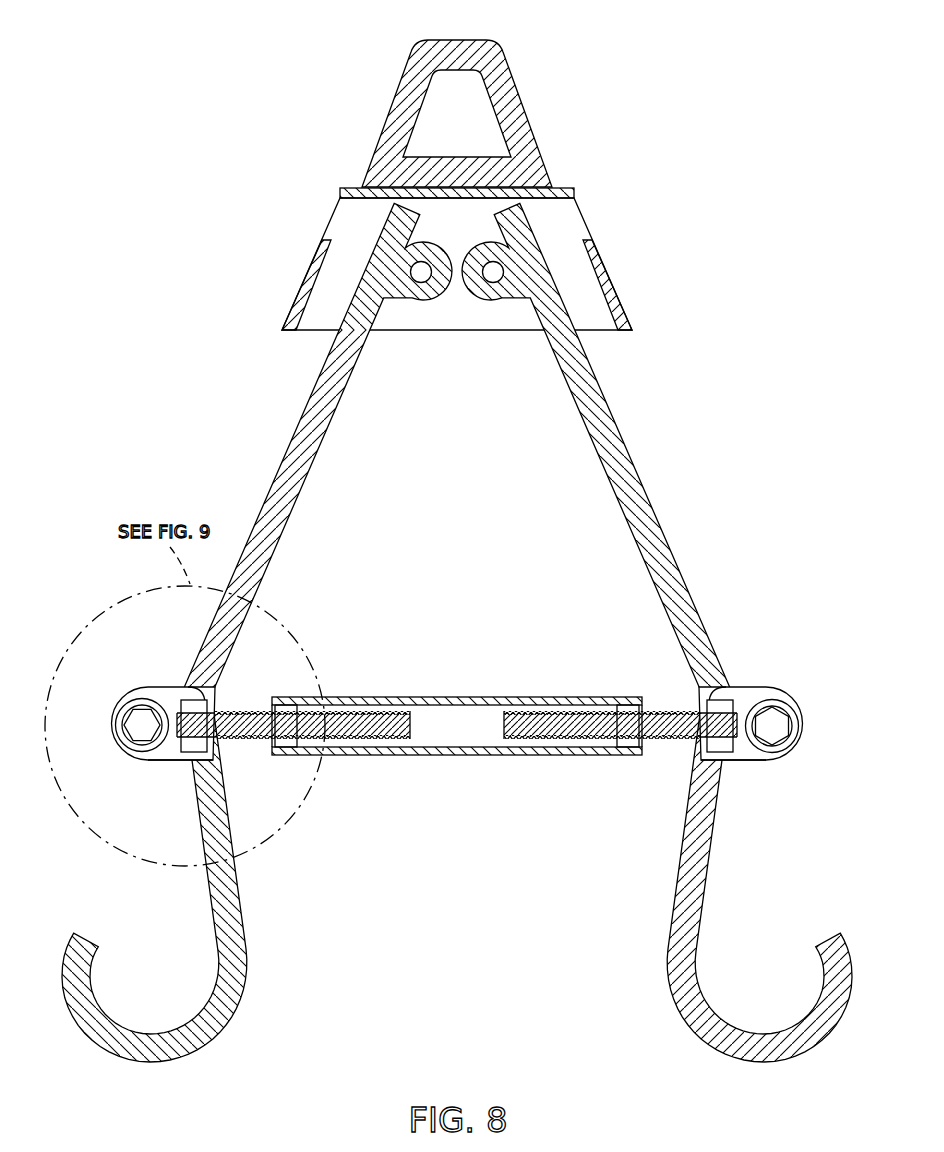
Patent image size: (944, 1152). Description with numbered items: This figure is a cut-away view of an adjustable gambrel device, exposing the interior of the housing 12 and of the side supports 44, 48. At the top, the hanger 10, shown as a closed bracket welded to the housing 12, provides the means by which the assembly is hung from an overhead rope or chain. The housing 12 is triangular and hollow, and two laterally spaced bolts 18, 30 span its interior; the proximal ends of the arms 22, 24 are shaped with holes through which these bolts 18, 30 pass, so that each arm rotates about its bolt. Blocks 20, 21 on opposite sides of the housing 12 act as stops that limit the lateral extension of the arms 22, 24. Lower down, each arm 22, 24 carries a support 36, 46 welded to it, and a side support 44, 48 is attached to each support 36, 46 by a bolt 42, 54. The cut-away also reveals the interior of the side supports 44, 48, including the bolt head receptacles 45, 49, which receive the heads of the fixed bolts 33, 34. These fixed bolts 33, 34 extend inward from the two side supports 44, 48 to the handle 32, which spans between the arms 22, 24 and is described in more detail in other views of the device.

The hanger 10 is at (480, 57).
The housing 12 is at (571, 233).
The bolt 18 is at (418, 270).
The block 20 is at (616, 306).
The block 21 is at (297, 300).
The arm 22 is at (617, 460).
The arm 24 is at (300, 443).
The bolt 30 is at (496, 272).
The handle 32 is at (565, 756).
The fixed bolt 33 is at (672, 712).
The fixed bolt 34 is at (240, 712).
The support 36 is at (170, 688).
The bolt 42 is at (138, 725).
The side support 44 is at (158, 760).
The bolt head receptacle 45 is at (194, 708).
The support 46 is at (748, 688).
The side support 48 is at (754, 760).
The bolt head receptacle 49 is at (722, 706).
The bolt 54 is at (775, 728).